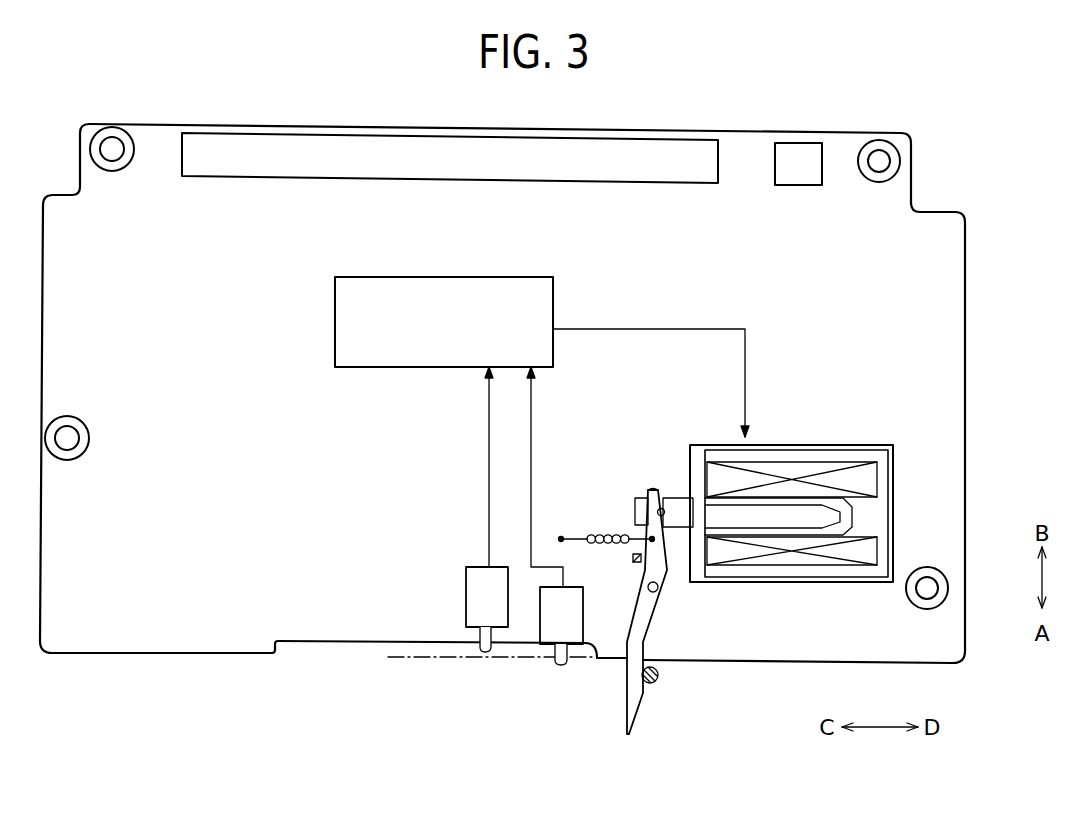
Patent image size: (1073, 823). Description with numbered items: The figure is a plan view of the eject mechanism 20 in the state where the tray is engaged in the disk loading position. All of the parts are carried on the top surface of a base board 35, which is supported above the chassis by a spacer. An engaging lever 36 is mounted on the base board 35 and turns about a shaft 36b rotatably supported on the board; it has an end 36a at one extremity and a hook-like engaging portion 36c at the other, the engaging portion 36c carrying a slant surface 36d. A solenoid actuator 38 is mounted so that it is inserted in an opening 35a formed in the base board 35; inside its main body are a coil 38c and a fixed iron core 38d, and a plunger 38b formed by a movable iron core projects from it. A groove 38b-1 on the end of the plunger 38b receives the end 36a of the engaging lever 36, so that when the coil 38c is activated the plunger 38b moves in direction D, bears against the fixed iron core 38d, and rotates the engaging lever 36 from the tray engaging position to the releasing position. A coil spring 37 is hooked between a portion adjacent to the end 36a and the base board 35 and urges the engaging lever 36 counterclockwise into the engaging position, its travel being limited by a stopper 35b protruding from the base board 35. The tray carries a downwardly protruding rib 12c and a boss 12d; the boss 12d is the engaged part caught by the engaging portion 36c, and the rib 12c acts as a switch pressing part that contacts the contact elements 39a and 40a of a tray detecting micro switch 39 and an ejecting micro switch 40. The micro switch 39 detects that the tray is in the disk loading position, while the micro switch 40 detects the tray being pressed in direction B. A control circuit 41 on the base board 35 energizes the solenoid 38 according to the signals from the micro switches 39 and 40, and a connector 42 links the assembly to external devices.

The rib 12c is at (440, 660).
The boss 12d is at (656, 683).
The eject mechanism 20 is at (903, 413).
The base board 35 is at (952, 277).
The opening 35a is at (893, 495).
The stopper 35b is at (632, 560).
The engaging lever 36 is at (621, 637).
The end of engaging lever 36a is at (652, 490).
The shaft 36b is at (658, 592).
The hook-like engaging portion 36c is at (630, 697).
The slant surface 36d is at (633, 733).
The coil spring 37 is at (595, 532).
The solenoid actuator 38 is at (820, 445).
The plunger 38b is at (757, 522).
The groove 38b-1 is at (641, 498).
The coil 38c is at (723, 470).
The fixed iron core 38d is at (860, 530).
The tray detecting micro switch 39 is at (531, 644).
The contact element 39a is at (553, 666).
The ejecting micro switch 40 is at (466, 598).
The contact element 40a is at (480, 642).
The control circuit 41 is at (334, 330).
The connector 42 is at (362, 178).